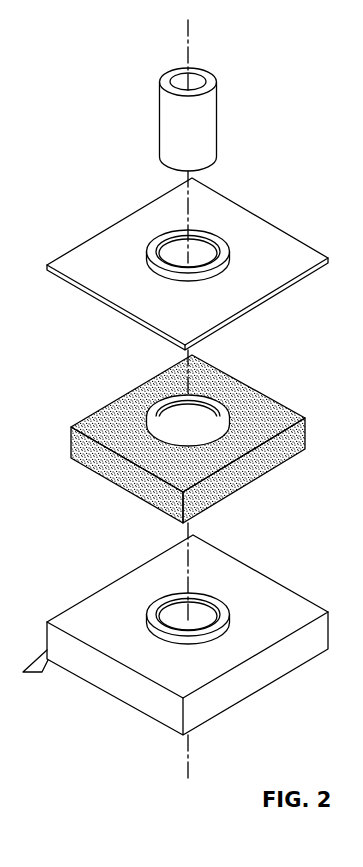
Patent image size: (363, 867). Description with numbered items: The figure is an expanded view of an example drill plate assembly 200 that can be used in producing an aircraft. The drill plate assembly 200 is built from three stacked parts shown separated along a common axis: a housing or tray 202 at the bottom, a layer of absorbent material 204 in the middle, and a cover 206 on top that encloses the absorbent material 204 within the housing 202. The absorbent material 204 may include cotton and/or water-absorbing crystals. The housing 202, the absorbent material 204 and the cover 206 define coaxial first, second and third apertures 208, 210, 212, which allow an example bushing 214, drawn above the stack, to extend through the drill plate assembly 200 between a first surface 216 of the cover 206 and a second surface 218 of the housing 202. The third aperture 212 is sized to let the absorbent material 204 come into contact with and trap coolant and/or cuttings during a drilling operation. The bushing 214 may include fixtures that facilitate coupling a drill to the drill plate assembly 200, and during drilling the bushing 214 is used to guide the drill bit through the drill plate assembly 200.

The drill plate assembly 200 is at (73, 53).
The housing 202 is at (175, 643).
The absorbent material 204 is at (267, 420).
The cover 206 is at (190, 255).
The first aperture 208 is at (162, 602).
The second aperture 210 is at (143, 405).
The third aperture 212 is at (165, 233).
The bushing 214 is at (217, 121).
The first surface 216 is at (228, 216).
The second surface 218 is at (112, 680).